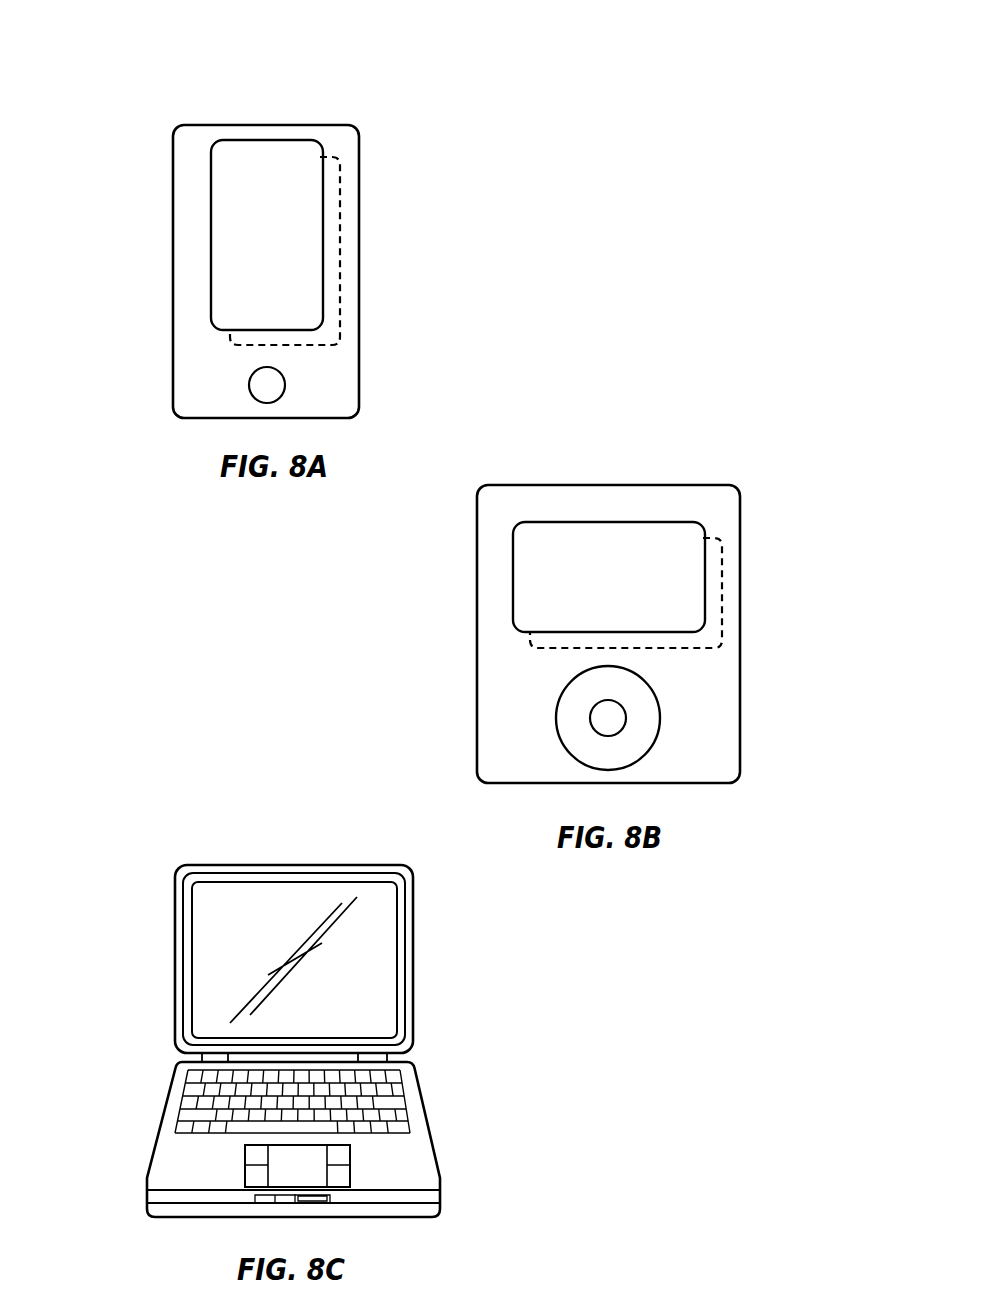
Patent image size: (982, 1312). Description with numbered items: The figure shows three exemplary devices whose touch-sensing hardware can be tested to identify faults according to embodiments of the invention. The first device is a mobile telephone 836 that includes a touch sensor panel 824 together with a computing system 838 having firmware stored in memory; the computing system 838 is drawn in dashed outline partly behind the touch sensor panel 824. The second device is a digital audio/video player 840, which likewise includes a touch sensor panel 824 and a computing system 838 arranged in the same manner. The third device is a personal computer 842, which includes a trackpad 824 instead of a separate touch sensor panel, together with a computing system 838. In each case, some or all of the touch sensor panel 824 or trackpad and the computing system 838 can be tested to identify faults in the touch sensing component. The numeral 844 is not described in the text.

In FIG. 8A, the mobile telephone 836 is at (194, 90).
In FIG. 8A, the touch sensor panel 824 is at (246, 285).
In FIG. 8B, the touch sensor panel 824 is at (587, 618).
In FIG. 8A, the computing system 838 is at (340, 250).
In FIG. 8B, the computing system 838 is at (722, 610).
In FIG. 8C, the computing system 838 is at (418, 1091).
In FIG. 8B, the digital audio/video player 840 is at (690, 458).
In FIG. 8C, the personal computer 844 is at (193, 837).
In FIG. 8C, the personal computer 842 is at (308, 1165).